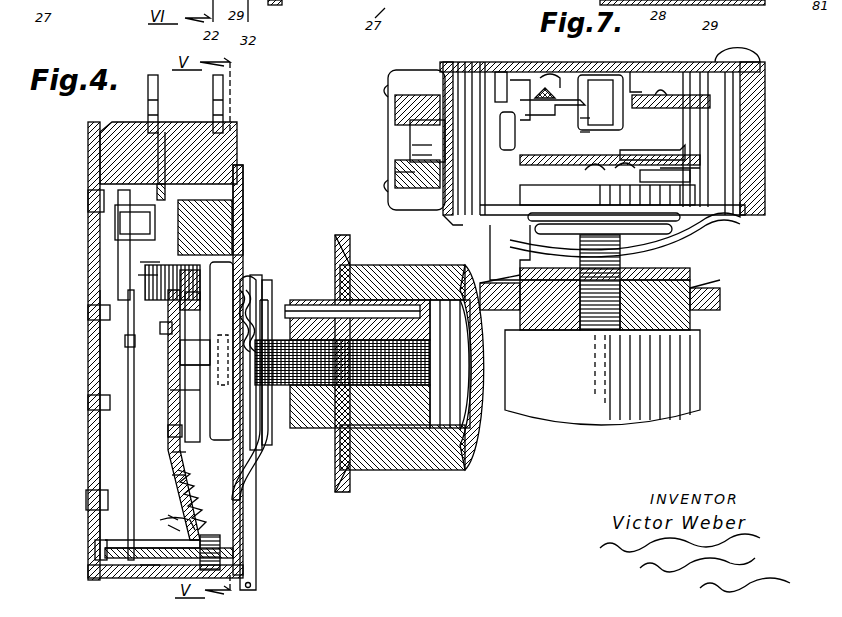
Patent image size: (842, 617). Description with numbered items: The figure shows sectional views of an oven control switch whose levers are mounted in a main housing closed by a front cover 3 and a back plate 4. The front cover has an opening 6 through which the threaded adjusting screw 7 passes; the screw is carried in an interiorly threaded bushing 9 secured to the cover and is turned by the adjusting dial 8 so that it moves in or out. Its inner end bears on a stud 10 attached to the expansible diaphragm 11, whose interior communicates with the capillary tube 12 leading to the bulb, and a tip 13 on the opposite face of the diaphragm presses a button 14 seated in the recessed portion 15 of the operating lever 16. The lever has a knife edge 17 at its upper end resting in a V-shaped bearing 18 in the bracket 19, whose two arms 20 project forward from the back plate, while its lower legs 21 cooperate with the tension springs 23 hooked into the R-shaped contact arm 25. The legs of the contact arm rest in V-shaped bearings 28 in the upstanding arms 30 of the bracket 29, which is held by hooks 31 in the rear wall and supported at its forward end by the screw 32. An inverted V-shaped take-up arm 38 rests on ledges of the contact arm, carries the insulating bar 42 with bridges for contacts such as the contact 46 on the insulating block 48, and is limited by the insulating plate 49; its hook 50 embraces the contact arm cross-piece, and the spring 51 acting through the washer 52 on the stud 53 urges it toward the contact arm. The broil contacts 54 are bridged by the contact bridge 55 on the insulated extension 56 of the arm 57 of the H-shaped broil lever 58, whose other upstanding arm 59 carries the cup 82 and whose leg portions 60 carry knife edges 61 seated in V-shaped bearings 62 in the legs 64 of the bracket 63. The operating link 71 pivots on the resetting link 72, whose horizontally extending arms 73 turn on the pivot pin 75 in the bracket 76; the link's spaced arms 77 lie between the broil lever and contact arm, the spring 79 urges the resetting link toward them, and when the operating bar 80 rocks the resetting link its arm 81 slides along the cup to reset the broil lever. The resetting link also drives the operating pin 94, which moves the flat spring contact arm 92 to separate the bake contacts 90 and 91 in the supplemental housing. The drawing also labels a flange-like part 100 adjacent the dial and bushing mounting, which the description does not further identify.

In FIG. 4, the front cover 3 is at (262, 455).
In FIG. 7, the front cover 3 is at (720, 240).
In FIG. 4, the back plate 4 is at (88, 430).
In FIG. 7, the back plate 4 is at (622, 70).
In FIG. 4, the opening 6 is at (285, 305).
In FIG. 4, the threaded adjusting screw 7 is at (430, 385).
In FIG. 7, the threaded adjusting screw 7 is at (600, 318).
In FIG. 4, the adjusting dial 8 is at (435, 470).
In FIG. 7, the adjusting dial 8 is at (700, 360).
In FIG. 4, the bushing 9 is at (297, 300).
In FIG. 7, the bushing 9 is at (655, 275).
In FIG. 4, the stud 10 is at (240, 318).
In FIG. 7, the stud 10 is at (690, 262).
In FIG. 4, the diaphragm 11 is at (212, 440).
In FIG. 4, the capillary tube 12 is at (245, 268).
In FIG. 7, the capillary tube 12 is at (690, 232).
In FIG. 4, the tip 13 is at (186, 400).
In FIG. 4, the button 14 is at (180, 363).
In FIG. 4, the recessed portion 15 is at (172, 390).
In FIG. 4, the operating lever 16 is at (168, 435).
In FIG. 7, the operating lever 16 is at (593, 132).
In FIG. 4, the knife edge 17 is at (180, 343).
In FIG. 4, the V-shaped bearing 18 is at (172, 330).
In FIG. 4, the bracket 19 is at (88, 365).
In FIG. 4, the arms 20 is at (125, 343).
In FIG. 7, the arms 20 is at (593, 117).
In FIG. 4, the legs 21 is at (172, 475).
In FIG. 7, the legs 21 is at (680, 200).
In FIG. 4, the tension springs 23 is at (172, 455).
In FIG. 7, the tension springs 23 is at (685, 182).
In FIG. 4, the contact arm 25 is at (272, 435).
In FIG. 7, the contact arm 25 is at (620, 180).
In FIG. 4, the V-shaped bearings 28 is at (180, 500).
In FIG. 7, the V-shaped bearings 28 is at (720, 168).
In FIG. 4, the bracket 29 is at (152, 572).
In FIG. 4, the upstanding arms 30 is at (175, 565).
In FIG. 7, the upstanding arms 30 is at (700, 158).
In FIG. 4, the hooks 31 is at (98, 550).
In FIG. 4, the screw 32 is at (230, 547).
In FIG. 4, the take-up arm 38 is at (242, 242).
In FIG. 7, the take-up arm 38 is at (640, 150).
In FIG. 4, the insulating bar 42 is at (240, 192).
In FIG. 4, the contact 46 is at (226, 122).
In FIG. 4, the insulating block 48 is at (178, 132).
In FIG. 4, the insulating plate 49 is at (171, 192).
In FIG. 4, the hook 50 is at (200, 296).
In FIG. 7, the hook 50 is at (585, 175).
In FIG. 4, the spring 51 is at (145, 287).
In FIG. 4, the washer 52 is at (140, 262).
In FIG. 4, the stud 53 is at (138, 275).
In FIG. 4, the contacts 54 is at (148, 105).
In FIG. 4, the contact bridge 55 is at (115, 228).
In FIG. 4, the insulated extension 56 is at (90, 200).
In FIG. 7, the insulated extension 56 is at (662, 95).
In FIG. 4, the arm 57 is at (88, 323).
In FIG. 4, the broil lever 58 is at (90, 400).
In FIG. 7, the broil lever 58 is at (600, 102).
In FIG. 7, the upstanding arm 59 is at (530, 135).
In FIG. 4, the leg portions 60 is at (128, 455).
In FIG. 4, the knife edges 61 is at (168, 515).
In FIG. 4, the V-shaped bearings 62 is at (160, 525).
In FIG. 4, the bracket 63 is at (88, 500).
In FIG. 7, the bracket 63 is at (640, 65).
In FIG. 4, the legs 64 is at (170, 525).
In FIG. 7, the legs 64 is at (712, 105).
In FIG. 7, the operating link 71 is at (515, 130).
In FIG. 7, the resetting link 72 is at (498, 72).
In FIG. 7, the horizontally extending arms 73 is at (452, 62).
In FIG. 7, the pivot pin 75 is at (445, 86).
In FIG. 7, the bracket 76 is at (450, 180).
In FIG. 7, the arms 77 is at (525, 80).
In FIG. 7, the spring 79 is at (395, 108).
In FIG. 7, the operating bar 80 is at (500, 262).
In FIG. 7, the horizontally extending arm 81 is at (545, 78).
In FIG. 7, the cup 82 is at (552, 96).
In FIG. 7, the contact 90 is at (395, 176).
In FIG. 7, the contact 91 is at (412, 158).
In FIG. 7, the contact arm 92 is at (410, 128).
In FIG. 7, the operating pin 94 is at (412, 148).
In FIG. 4, the flange 100 is at (350, 245).
In FIG. 7, the flange 100 is at (715, 298).